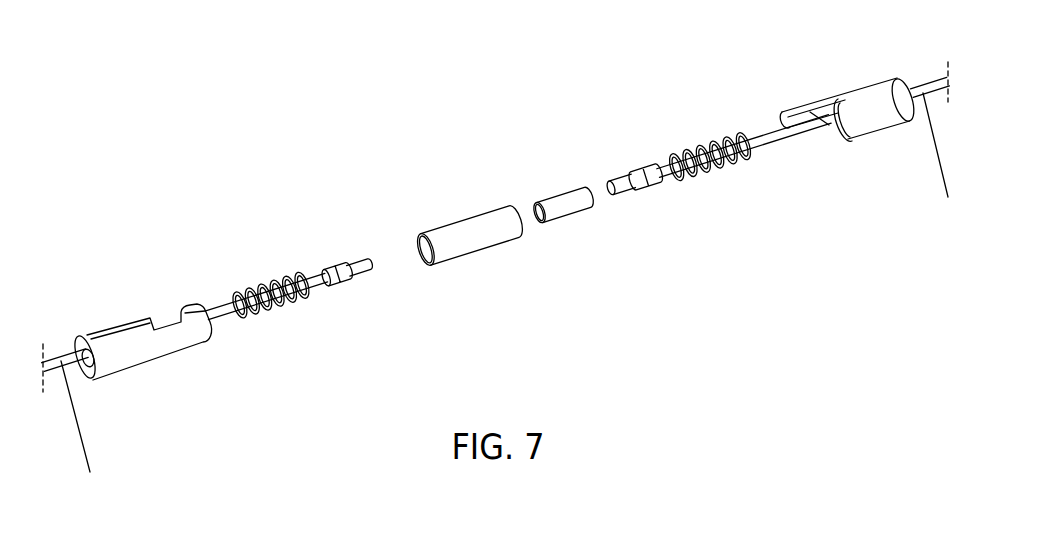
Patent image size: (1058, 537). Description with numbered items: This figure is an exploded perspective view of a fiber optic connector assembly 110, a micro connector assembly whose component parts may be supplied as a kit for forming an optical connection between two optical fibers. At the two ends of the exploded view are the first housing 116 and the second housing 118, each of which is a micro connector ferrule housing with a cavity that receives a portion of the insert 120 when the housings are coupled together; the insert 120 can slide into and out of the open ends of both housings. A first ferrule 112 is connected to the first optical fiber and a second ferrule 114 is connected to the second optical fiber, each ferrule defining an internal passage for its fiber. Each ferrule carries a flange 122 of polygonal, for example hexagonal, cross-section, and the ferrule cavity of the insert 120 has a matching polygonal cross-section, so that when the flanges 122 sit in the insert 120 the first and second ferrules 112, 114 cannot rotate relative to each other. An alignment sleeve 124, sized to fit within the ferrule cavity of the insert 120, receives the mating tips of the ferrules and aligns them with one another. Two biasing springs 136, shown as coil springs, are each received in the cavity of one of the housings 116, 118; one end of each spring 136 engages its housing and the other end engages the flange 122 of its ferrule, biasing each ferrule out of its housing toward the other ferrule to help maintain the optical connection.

The fiber optic connector assembly 110 is at (355, 117).
The first ferrule 112 is at (322, 252).
The second ferrule 114 is at (626, 160).
The first housing 116 is at (123, 307).
The second housing 118 is at (827, 75).
The insert 120 is at (452, 218).
The flange 122 is at (343, 283).
The alignment sleeve 124 is at (548, 189).
The biasing spring 136 is at (256, 279).